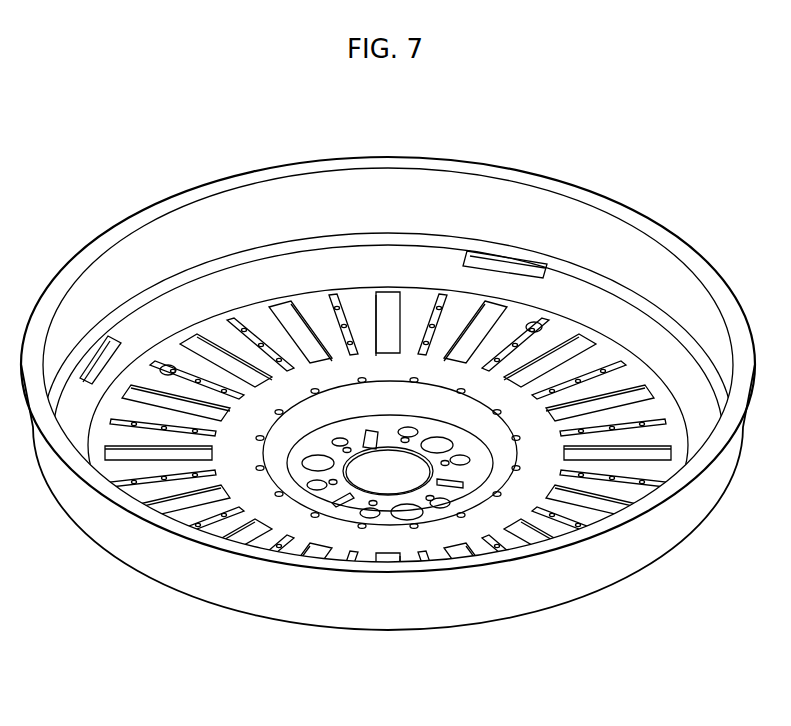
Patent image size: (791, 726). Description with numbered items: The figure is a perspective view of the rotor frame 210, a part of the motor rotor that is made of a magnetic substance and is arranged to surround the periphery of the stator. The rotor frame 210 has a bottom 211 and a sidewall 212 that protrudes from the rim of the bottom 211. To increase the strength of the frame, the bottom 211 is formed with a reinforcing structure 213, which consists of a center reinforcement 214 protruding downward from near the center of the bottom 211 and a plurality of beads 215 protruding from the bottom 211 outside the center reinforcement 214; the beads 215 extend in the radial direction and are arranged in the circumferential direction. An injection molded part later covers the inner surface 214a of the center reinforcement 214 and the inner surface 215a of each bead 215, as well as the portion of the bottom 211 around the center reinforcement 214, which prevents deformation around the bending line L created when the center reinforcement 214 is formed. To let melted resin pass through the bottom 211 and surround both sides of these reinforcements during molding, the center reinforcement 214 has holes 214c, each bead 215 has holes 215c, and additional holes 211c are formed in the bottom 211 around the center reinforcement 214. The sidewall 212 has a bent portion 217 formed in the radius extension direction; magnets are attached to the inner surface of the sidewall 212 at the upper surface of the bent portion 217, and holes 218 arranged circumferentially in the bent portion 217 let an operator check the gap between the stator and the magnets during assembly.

The rotor frame 210 is at (376, 703).
The bottom 211 is at (207, 327).
The holes 211c is at (277, 497).
The sidewall 212 is at (318, 180).
The reinforcing structure 213 is at (420, 401).
The center reinforcement 214 is at (497, 492).
The inner surface 214a is at (341, 437).
The holes 214c is at (410, 430).
The beads 215 is at (388, 401).
The inner surface 215a is at (310, 292).
The holes 215c is at (257, 333).
The bent portion 217 is at (593, 287).
The holes 218 is at (510, 263).
The bending line L is at (259, 408).